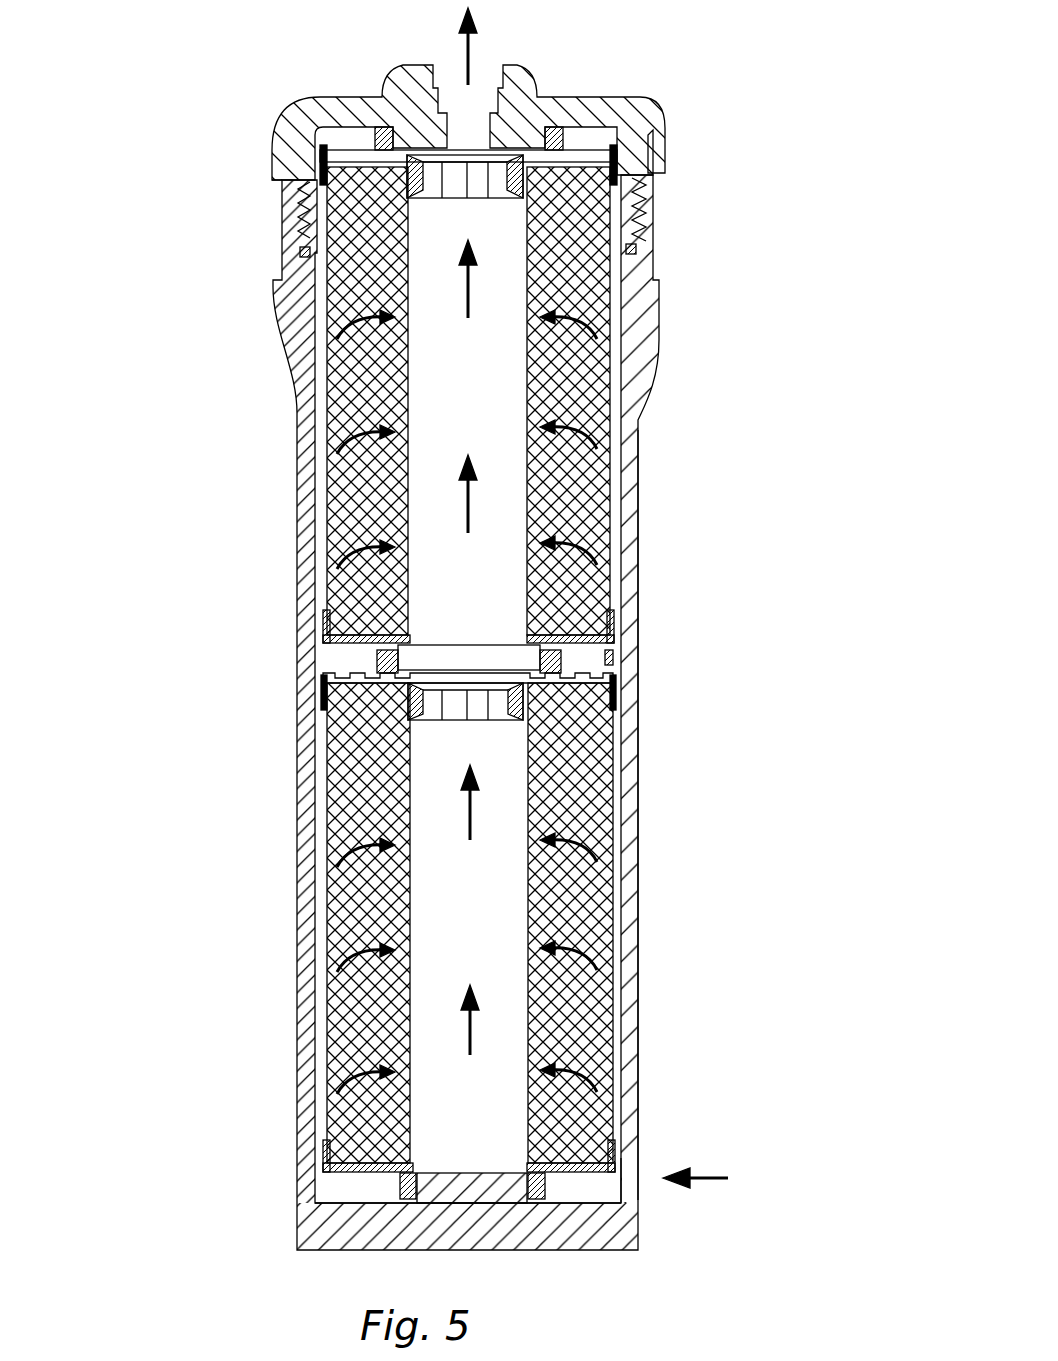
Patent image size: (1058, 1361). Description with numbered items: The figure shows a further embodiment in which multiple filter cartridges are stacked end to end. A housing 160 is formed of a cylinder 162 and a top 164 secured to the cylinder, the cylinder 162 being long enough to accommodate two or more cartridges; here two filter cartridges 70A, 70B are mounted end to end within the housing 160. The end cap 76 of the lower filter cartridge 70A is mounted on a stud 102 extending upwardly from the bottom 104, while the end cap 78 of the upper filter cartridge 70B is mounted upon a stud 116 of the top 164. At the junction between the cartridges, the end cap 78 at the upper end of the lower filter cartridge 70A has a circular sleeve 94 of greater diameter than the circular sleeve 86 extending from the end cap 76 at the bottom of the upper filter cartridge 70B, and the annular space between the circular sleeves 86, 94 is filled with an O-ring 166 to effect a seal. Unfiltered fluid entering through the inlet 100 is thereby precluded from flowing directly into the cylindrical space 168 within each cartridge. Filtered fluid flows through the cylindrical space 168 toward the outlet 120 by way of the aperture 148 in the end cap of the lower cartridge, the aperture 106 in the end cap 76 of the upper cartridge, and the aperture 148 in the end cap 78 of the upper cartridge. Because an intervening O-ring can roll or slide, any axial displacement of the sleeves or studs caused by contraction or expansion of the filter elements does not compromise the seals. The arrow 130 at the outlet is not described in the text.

The outlet flow arrow 130 is at (478, 20).
The outlet 120 is at (497, 62).
The stud 116 is at (502, 140).
The top 164 is at (595, 97).
The end cap 78 is at (597, 137).
The aperture 148 is at (455, 170).
The upper filter cartridge 70B is at (485, 672).
The cylindrical space 168 is at (414, 366).
The cylinder 162 is at (636, 493).
The housing 160 is at (648, 565).
The O-ring 166 is at (387, 640).
The circular sleeve 86 is at (388, 655).
The aperture 106 is at (509, 642).
The circular sleeve 94 is at (620, 647).
The end cap 76 is at (333, 650).
The lower filter cartridge 70A is at (600, 749).
The stud 102 is at (440, 1170).
The inlet 100 is at (640, 1188).
The bottom 104 is at (588, 1227).